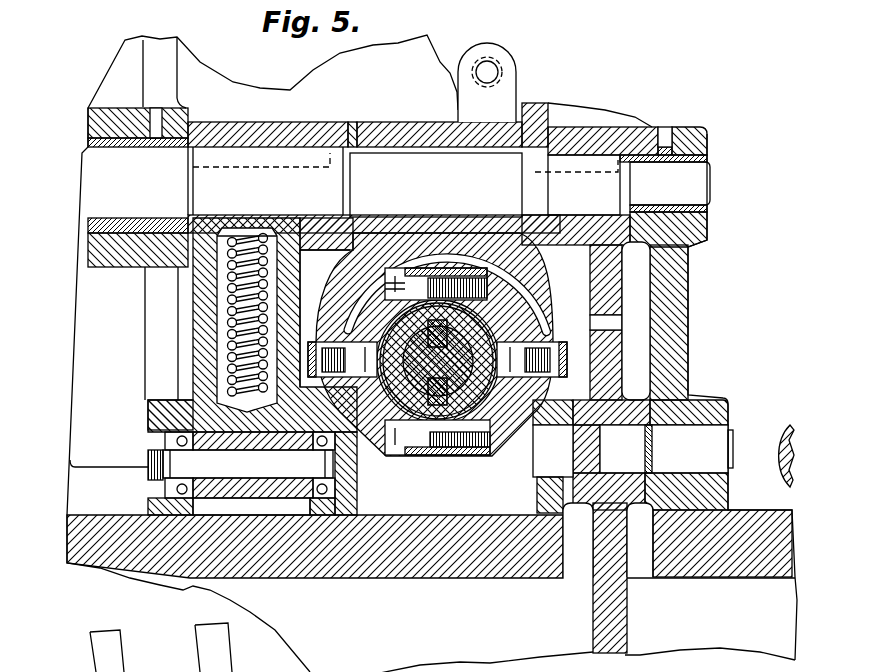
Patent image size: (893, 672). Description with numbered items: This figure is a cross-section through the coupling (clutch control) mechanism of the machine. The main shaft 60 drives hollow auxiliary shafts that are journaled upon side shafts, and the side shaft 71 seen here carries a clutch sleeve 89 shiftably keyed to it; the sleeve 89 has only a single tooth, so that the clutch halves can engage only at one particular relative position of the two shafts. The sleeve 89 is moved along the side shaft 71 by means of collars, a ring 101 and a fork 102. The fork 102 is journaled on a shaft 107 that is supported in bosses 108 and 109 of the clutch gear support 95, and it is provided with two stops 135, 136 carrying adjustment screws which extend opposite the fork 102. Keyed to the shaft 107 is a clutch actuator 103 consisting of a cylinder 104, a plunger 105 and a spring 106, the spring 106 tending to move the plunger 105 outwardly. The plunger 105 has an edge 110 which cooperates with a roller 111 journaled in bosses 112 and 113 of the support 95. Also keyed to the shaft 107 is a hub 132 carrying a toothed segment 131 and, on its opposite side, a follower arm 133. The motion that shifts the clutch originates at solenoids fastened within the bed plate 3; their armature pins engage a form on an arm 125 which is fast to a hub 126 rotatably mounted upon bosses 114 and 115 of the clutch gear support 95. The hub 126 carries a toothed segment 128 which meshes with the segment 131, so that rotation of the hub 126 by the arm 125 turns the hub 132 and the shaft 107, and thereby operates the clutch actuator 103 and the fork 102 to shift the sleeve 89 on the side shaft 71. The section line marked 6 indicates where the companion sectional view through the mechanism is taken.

The bed plate 3 is at (358, 565).
The section line 6- 6 is at (496, 14).
The main shaft 60 is at (778, 425).
The side shaft 71 is at (387, 428).
The clutch sleeve 89 is at (495, 432).
The clutch gear support 95 is at (190, 65).
The ring 101 is at (405, 440).
The fork 102 is at (515, 272).
The clutch actuator 103 is at (298, 119).
The cylinder 104 is at (298, 285).
The plunger 105 is at (235, 408).
The spring 106 is at (228, 316).
The shaft 107 is at (354, 190).
The boss 108 is at (95, 246).
The boss 109 is at (688, 127).
The edge 110 is at (267, 448).
The roller 111 is at (213, 448).
The boss 112 is at (160, 415).
The boss 113 is at (350, 455).
The boss 114 is at (545, 496).
The boss 115 is at (730, 405).
The arm 125 is at (620, 606).
The hub 126 is at (635, 402).
The toothed segment 128 is at (600, 352).
The toothed segment 131 is at (595, 282).
The hub 132 is at (605, 130).
The follower arm 133 is at (535, 104).
The stop 135 is at (508, 80).
The stop 136 is at (118, 646).